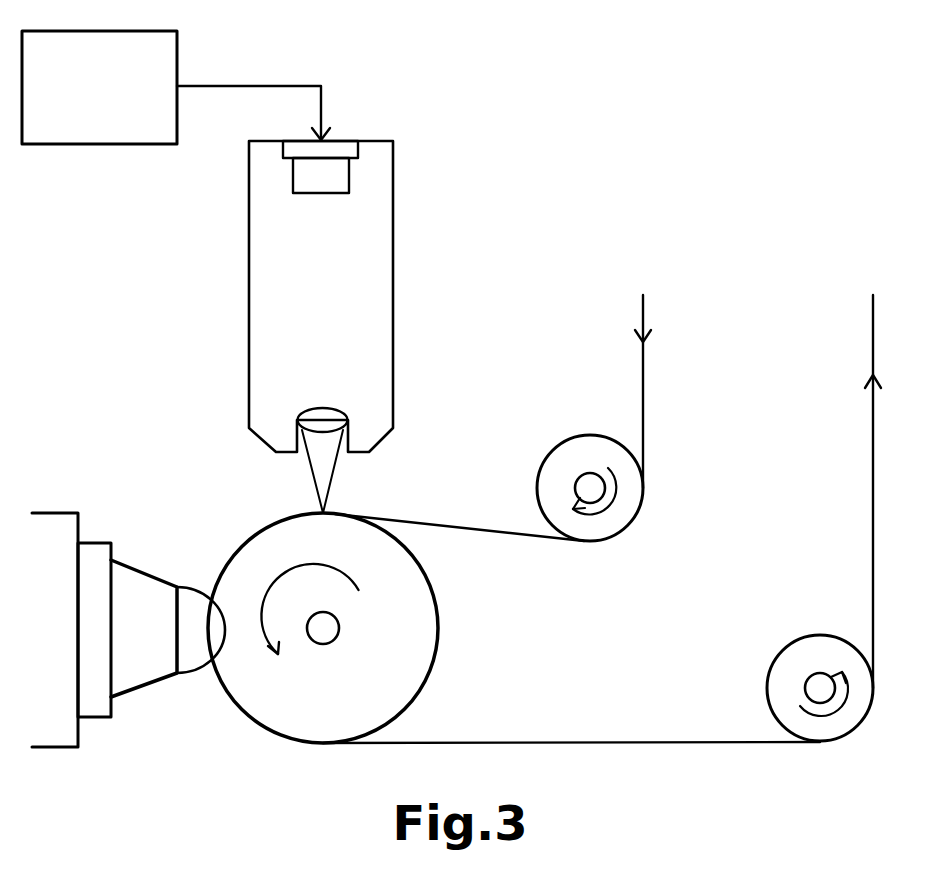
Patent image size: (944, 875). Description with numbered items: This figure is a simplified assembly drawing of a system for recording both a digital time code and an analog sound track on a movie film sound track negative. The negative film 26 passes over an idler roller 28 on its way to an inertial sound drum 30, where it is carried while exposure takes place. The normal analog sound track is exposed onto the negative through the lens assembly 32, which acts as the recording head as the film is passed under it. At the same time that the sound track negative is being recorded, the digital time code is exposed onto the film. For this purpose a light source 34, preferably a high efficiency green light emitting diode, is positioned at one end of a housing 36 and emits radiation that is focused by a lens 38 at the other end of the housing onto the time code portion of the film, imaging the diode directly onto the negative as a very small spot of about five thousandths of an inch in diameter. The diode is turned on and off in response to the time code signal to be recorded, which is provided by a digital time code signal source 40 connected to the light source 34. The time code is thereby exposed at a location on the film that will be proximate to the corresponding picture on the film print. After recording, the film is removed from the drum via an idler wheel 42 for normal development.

The negative film 26 is at (463, 528).
The idler roller 28 is at (556, 450).
The inertial sound drum 30 is at (437, 647).
The lens assembly 32 is at (148, 684).
The light source 34 is at (347, 141).
The housing 36 is at (393, 276).
The lens 38 is at (322, 420).
The digital time code signal source 40 is at (115, 145).
The idler wheel 42 is at (780, 652).